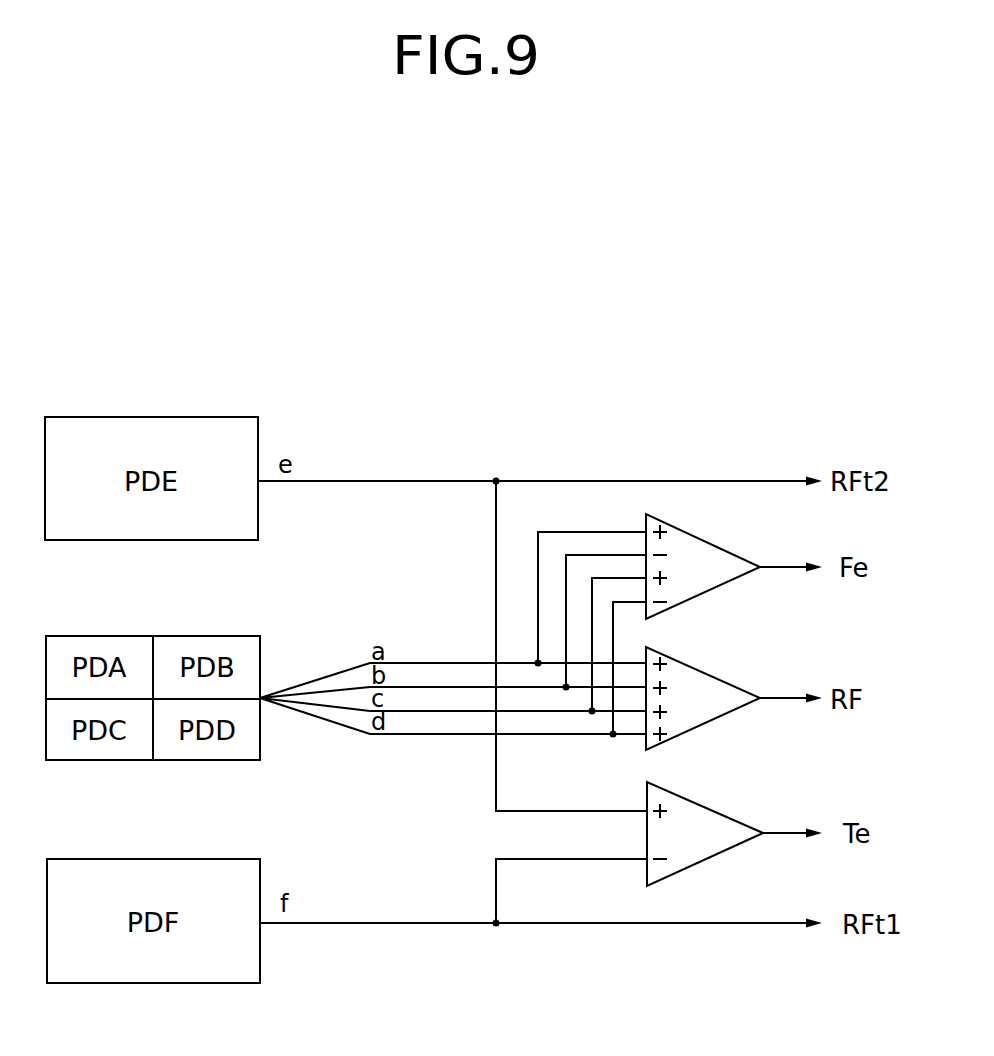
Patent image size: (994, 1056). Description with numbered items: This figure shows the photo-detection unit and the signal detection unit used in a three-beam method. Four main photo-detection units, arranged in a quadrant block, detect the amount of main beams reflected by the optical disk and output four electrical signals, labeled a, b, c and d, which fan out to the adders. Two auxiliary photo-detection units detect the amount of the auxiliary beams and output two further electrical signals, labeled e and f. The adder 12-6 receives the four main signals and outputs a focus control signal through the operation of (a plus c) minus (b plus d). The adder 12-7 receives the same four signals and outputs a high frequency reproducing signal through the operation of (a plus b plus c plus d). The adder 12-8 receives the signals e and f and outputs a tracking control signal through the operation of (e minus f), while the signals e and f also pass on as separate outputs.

The adder 12-6 is at (703, 555).
The adder 12-7 is at (703, 689).
The adder 12-8 is at (705, 824).